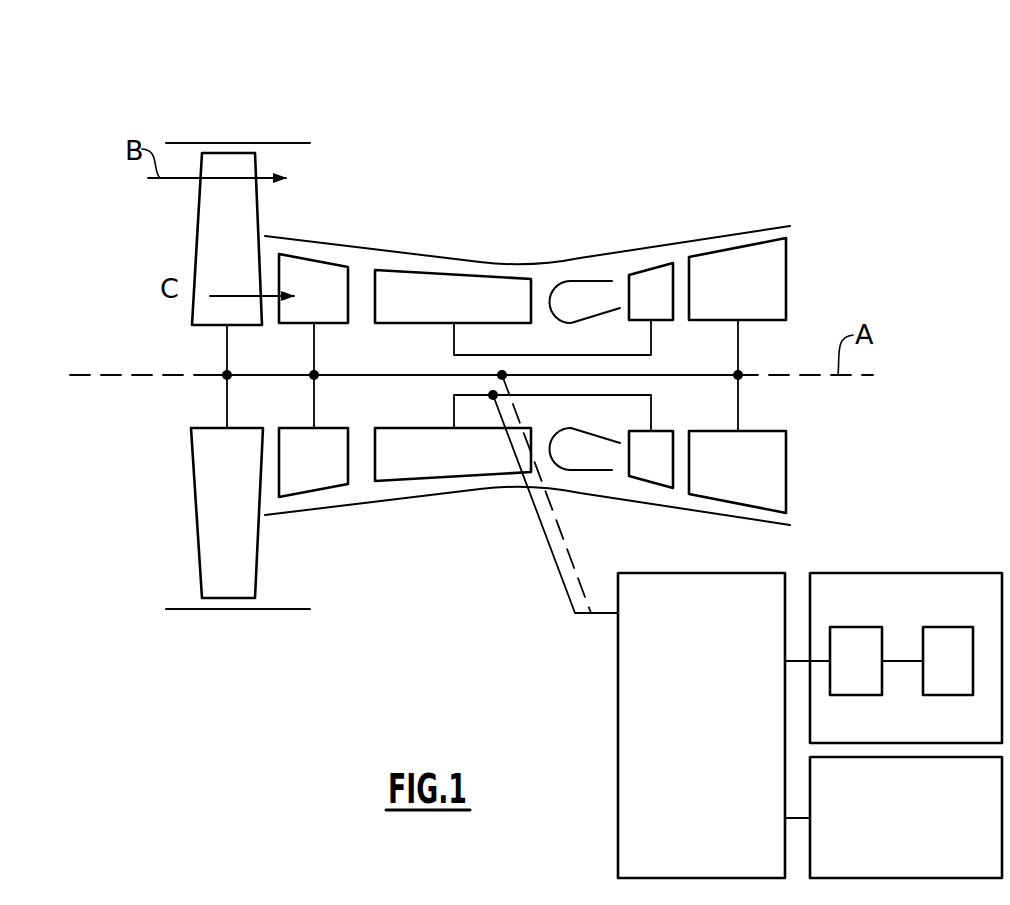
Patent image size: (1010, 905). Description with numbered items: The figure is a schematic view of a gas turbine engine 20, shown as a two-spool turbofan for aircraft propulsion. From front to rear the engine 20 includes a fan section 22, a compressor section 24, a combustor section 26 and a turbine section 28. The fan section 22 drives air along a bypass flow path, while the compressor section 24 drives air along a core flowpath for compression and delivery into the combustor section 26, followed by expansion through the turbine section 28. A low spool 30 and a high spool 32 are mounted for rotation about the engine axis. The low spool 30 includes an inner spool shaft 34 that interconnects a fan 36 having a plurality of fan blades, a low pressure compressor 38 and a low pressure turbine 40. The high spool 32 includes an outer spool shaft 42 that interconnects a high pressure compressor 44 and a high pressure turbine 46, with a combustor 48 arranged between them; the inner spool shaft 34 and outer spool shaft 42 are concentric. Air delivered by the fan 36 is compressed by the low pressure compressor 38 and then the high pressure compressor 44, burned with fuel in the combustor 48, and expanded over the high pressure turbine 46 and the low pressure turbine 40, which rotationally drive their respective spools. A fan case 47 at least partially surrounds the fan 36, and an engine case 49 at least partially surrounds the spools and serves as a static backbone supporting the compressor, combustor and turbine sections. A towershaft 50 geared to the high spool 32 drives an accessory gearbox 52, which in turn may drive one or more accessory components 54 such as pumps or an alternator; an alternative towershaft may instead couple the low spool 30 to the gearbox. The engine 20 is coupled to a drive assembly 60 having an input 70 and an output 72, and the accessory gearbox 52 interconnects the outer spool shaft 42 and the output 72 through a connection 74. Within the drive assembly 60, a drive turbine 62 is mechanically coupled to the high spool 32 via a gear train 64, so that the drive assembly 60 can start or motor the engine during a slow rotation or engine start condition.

The gas turbine engine 20 is at (152, 78).
The fan section 22 is at (162, 241).
The compressor section 24 is at (363, 214).
The combustor section 26 is at (570, 215).
The turbine section 28 is at (724, 182).
The low spool 30 is at (414, 390).
The high spool 32 is at (475, 410).
The inner spool shaft 34 is at (377, 375).
The fan 36 is at (241, 266).
The low pressure compressor 38 is at (300, 270).
The low pressure turbine 40 is at (725, 268).
The outer spool shaft 42 is at (484, 397).
The high pressure compressor 44 is at (423, 285).
The high pressure turbine 46 is at (651, 282).
The fan case 47 is at (286, 143).
The combustor 48 is at (573, 281).
The engine case 49 is at (770, 228).
The towershaft 50 is at (555, 558).
The accessory gearbox 52 is at (720, 638).
The accessory components 54 is at (918, 791).
The drive assembly 60 is at (912, 608).
The drive turbine 62 is at (964, 671).
The gear train 64 is at (872, 671).
The input 70 is at (900, 660).
The output 72 is at (818, 660).
The connection to accessory gearbox 74 is at (797, 660).